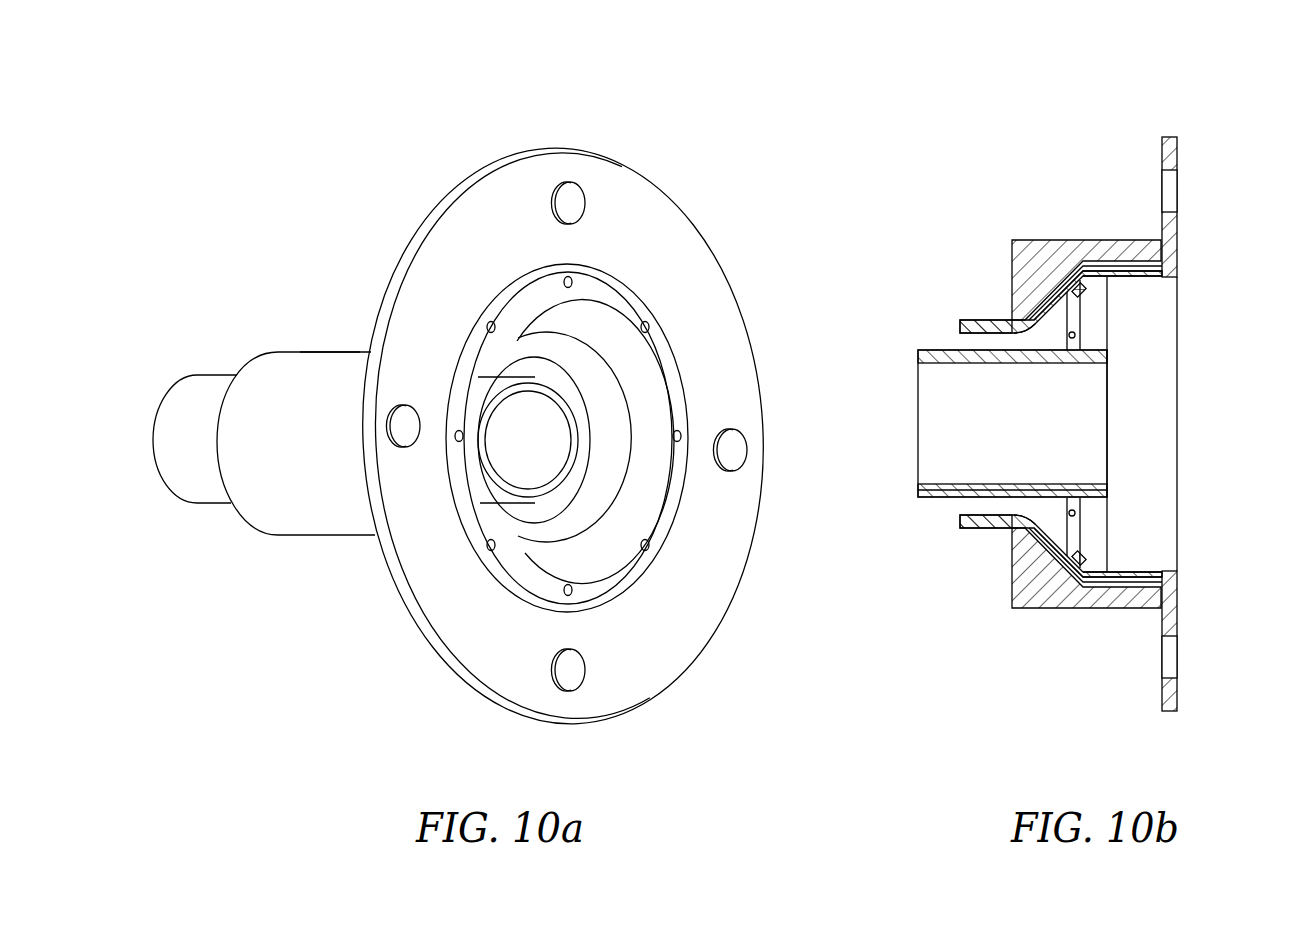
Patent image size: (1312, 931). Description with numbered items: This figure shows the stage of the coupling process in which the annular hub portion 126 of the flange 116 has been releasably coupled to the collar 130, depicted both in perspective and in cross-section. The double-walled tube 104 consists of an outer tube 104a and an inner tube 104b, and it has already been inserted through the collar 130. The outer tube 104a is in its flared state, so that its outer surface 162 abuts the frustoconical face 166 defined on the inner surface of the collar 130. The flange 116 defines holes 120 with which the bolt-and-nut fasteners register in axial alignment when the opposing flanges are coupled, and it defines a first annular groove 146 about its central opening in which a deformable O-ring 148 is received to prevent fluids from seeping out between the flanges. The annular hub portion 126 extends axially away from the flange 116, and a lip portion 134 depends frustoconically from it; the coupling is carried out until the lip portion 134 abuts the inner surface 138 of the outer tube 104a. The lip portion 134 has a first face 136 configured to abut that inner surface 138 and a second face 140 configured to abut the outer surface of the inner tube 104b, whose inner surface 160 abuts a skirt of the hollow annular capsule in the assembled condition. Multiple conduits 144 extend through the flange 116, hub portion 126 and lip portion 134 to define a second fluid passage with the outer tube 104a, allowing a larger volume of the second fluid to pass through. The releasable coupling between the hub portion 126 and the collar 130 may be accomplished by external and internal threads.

In FIG. 10A, the double-walled tube 104 is at (300, 353).
In FIG. 10A, the outer tube 104a is at (318, 363).
In FIG. 10B, the outer tube 104a is at (977, 320).
In FIG. 10A, the inner tube 104b is at (202, 388).
In FIG. 10B, the inner tube 104b is at (932, 497).
In FIG. 10A, the flange 116 is at (427, 225).
In FIG. 10B, the flange 116 is at (1165, 128).
In FIG. 10A, the holes 120 is at (745, 450).
In FIG. 10B, the holes 120 is at (1185, 190).
In FIG. 10A, the annular hub portion 126 is at (638, 391).
In FIG. 10B, the annular hub portion 126 is at (1104, 594).
In FIG. 10B, the collar 130 is at (1023, 230).
In FIG. 10A, the lip portion 134 is at (586, 366).
In FIG. 10B, the lip portion 134 is at (1087, 295).
In FIG. 10B, the first face 136 is at (1083, 262).
In FIG. 10A, the inner surface 138 is at (518, 341).
In FIG. 10B, the inner surface 138 is at (1073, 287).
In FIG. 10A, the second face 140 is at (565, 333).
In FIG. 10B, the second face 140 is at (1113, 293).
In FIG. 10A, the conduit 144 is at (643, 321).
In FIG. 10B, the conduit 144 is at (1182, 276).
In FIG. 10A, the first annular groove 146 is at (540, 283).
In FIG. 10B, the O-ring 148 is at (1182, 262).
In FIG. 10B, the inner surface 160 is at (1021, 364).
In FIG. 10B, the outer surface 162 is at (1033, 297).
In FIG. 10B, the frustoconical face 166 is at (1056, 309).